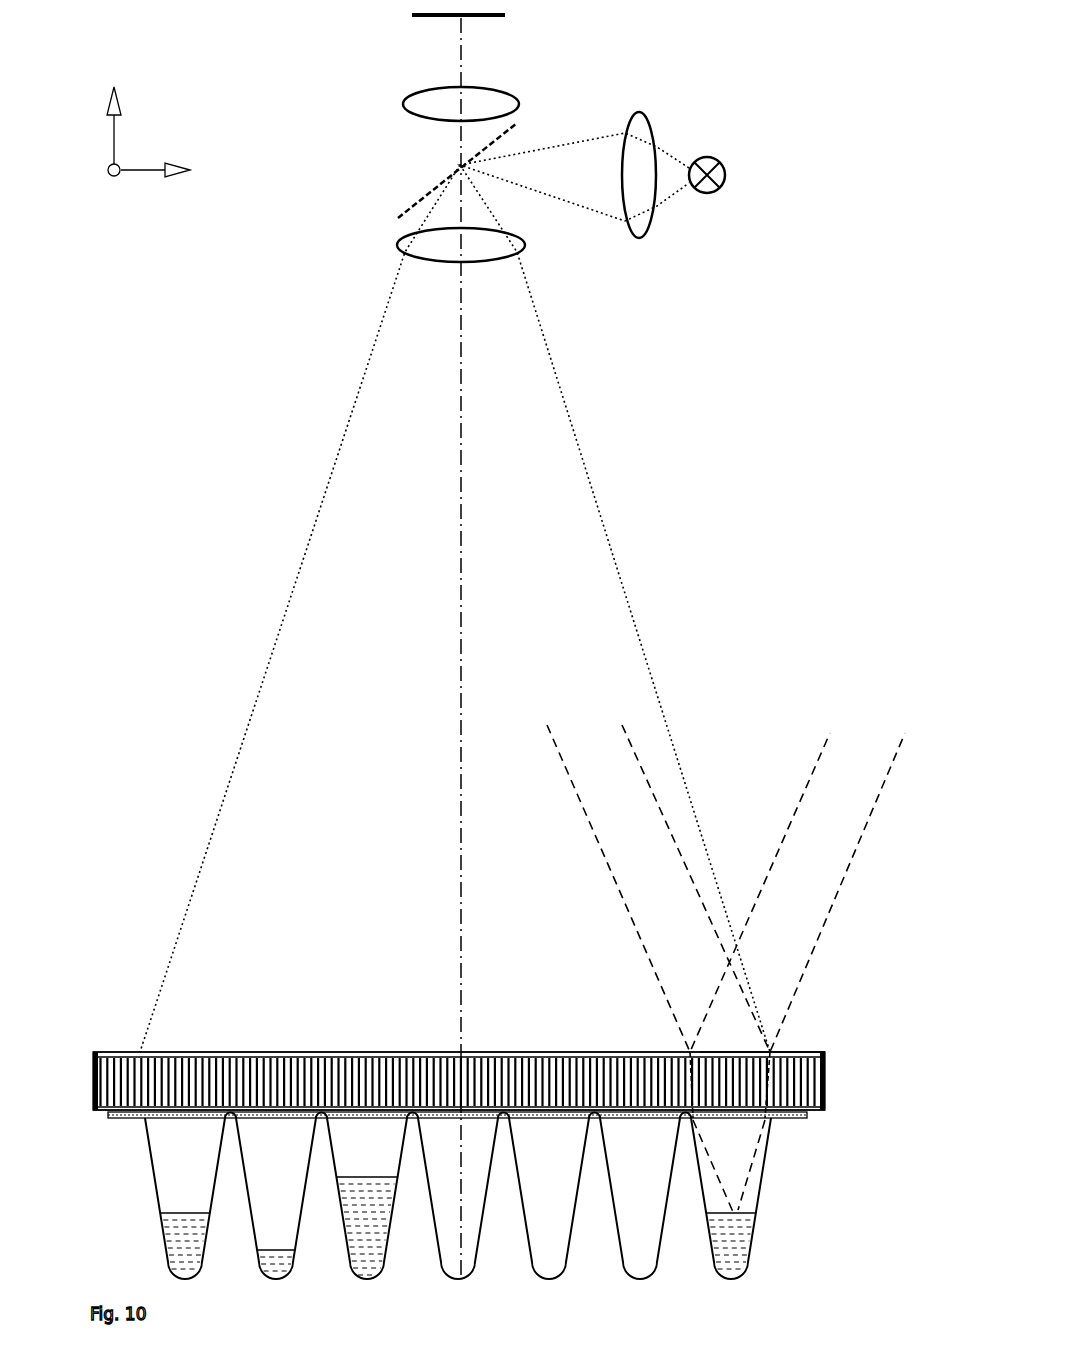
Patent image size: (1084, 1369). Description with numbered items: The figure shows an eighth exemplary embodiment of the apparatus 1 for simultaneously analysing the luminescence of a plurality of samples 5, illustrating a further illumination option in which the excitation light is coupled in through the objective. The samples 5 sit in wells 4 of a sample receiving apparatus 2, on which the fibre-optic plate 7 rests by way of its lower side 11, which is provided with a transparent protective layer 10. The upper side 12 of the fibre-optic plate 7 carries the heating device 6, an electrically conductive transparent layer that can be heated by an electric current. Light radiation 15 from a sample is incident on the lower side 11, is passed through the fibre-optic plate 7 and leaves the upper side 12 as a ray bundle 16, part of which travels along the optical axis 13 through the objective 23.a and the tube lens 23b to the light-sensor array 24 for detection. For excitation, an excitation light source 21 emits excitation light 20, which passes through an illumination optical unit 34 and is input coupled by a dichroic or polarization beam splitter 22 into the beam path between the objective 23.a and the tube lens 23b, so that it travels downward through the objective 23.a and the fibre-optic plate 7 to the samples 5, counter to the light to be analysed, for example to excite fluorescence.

The apparatus 1 is at (806, 35).
The sample receiving apparatus 2 is at (485, 1144).
The wells 4 is at (735, 1128).
The samples 5 is at (778, 1270).
The heating device 6 is at (826, 1052).
The fibre-optic plate 7 is at (826, 1082).
The transparent protective layer 10 is at (826, 1110).
The lower side 11 is at (807, 1118).
The upper side 12 is at (803, 1048).
The optical axis 13 is at (456, 960).
The light radiation 15 is at (747, 1180).
The ray bundle 16 is at (798, 980).
The excitation light 20 is at (618, 577).
The excitation light source 21 is at (722, 162).
The beam splitter 22 is at (405, 217).
The objective 23.a is at (520, 250).
The tube lens 23b is at (507, 88).
The light-sensor array 24 is at (505, 17).
The illumination optical unit 34 is at (643, 115).